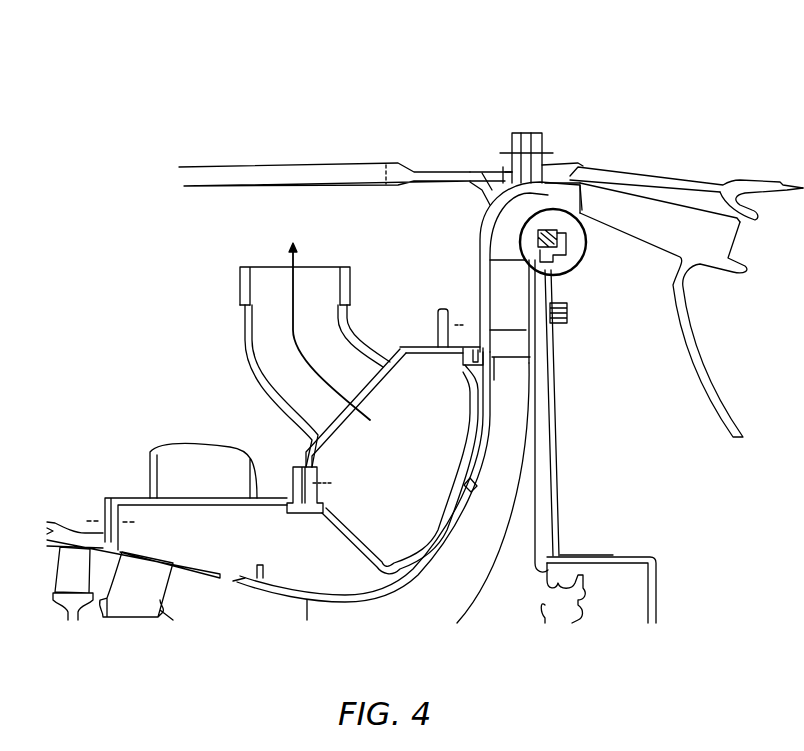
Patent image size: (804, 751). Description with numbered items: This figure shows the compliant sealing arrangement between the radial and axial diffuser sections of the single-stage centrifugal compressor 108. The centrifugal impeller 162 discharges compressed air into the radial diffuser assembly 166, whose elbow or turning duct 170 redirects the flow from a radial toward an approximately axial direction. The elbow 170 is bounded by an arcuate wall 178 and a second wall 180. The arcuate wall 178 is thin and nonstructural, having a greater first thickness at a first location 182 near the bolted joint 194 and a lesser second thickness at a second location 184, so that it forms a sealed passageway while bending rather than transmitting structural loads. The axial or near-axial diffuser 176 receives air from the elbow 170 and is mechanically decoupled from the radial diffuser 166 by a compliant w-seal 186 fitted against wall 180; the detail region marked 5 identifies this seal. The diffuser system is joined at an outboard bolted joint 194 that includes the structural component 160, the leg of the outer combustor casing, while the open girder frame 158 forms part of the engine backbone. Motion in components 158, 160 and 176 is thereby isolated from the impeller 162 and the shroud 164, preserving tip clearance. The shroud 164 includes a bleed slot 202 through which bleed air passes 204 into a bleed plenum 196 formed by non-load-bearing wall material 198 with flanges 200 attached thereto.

The single-stage centrifugal compressor 108 is at (541, 78).
The structural component 158 is at (275, 163).
The arcuate wall 178 is at (497, 196).
The elbow or turning duct 170 is at (498, 202).
The radial diffuser assembly 166 is at (488, 273).
The first location (first thickness) 182 is at (507, 190).
The bolted joint 194 is at (548, 122).
The structural component (leg of outer combustor casing assembly) 160 is at (642, 173).
The axial or near-axial diffuser 176 is at (697, 187).
The seal (w-seal) 186 is at (601, 260).
The detail region of FIG. 5 is at (567, 270).
The second wall 180 is at (537, 340).
The centrifugal impeller 162 is at (485, 592).
The shroud 164 is at (480, 395).
The bleed slot 202 is at (466, 484).
The second location (second thickness) 184 is at (477, 306).
The flanges 200 is at (434, 321).
The wall material 198 is at (312, 450).
The bleed plenum 196 is at (423, 443).
The bleed air passage (bleed air flow) 204 is at (293, 287).